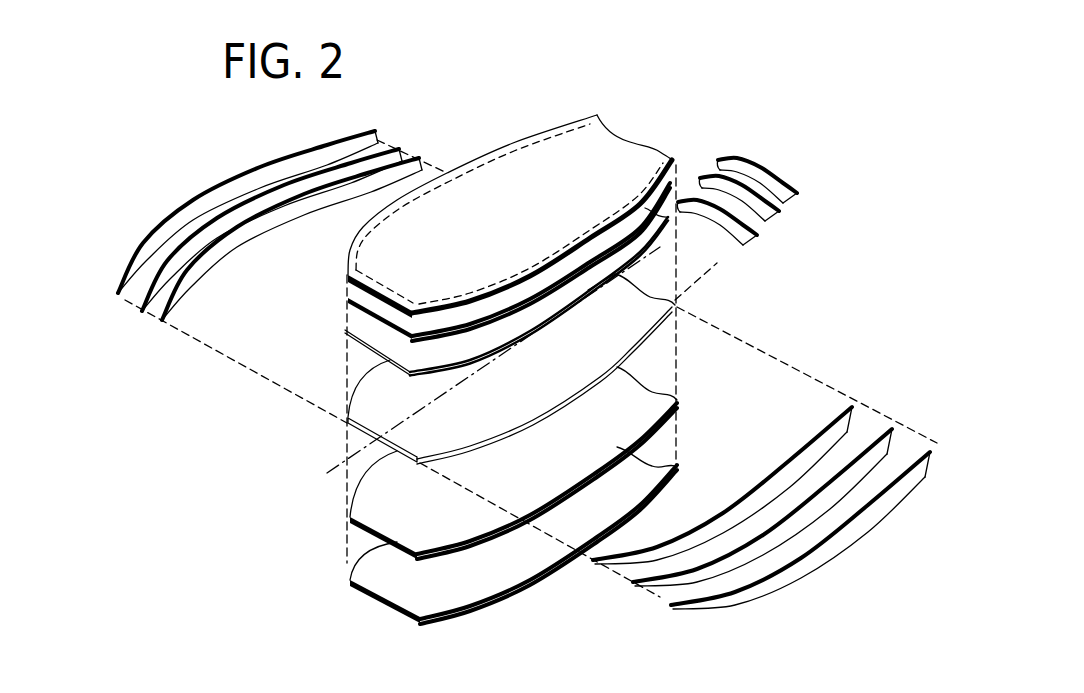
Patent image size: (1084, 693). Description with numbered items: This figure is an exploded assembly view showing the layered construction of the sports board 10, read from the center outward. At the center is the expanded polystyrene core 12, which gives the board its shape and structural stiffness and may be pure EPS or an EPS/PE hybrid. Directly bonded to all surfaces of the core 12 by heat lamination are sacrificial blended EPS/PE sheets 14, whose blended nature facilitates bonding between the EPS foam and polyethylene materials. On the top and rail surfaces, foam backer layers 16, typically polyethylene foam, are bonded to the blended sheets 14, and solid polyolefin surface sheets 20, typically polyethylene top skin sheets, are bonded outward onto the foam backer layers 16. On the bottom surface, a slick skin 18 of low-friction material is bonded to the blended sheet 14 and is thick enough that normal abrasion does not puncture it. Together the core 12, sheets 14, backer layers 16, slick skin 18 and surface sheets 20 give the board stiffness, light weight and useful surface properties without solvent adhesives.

The sports board 10 is at (136, 160).
The EPS core 12 is at (567, 380).
The sacrificial blended EPS/PE sheet 14 is at (200, 280).
The foam backer layer 16 is at (140, 293).
The slick skin 18 is at (463, 594).
The surface sheet 20 is at (120, 280).